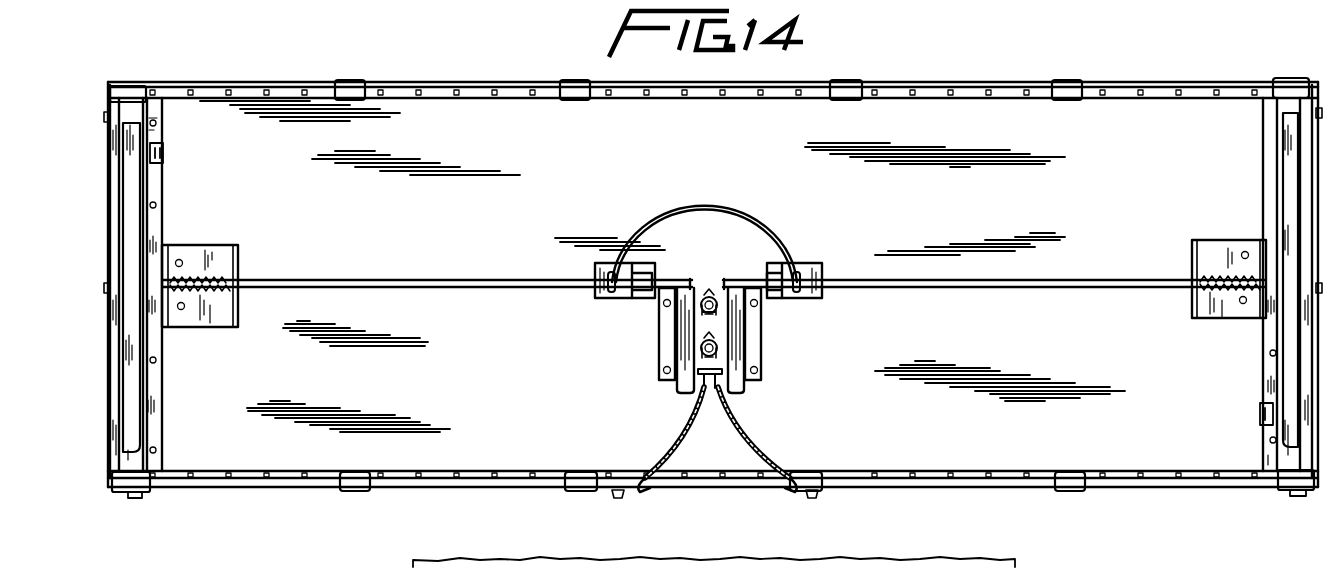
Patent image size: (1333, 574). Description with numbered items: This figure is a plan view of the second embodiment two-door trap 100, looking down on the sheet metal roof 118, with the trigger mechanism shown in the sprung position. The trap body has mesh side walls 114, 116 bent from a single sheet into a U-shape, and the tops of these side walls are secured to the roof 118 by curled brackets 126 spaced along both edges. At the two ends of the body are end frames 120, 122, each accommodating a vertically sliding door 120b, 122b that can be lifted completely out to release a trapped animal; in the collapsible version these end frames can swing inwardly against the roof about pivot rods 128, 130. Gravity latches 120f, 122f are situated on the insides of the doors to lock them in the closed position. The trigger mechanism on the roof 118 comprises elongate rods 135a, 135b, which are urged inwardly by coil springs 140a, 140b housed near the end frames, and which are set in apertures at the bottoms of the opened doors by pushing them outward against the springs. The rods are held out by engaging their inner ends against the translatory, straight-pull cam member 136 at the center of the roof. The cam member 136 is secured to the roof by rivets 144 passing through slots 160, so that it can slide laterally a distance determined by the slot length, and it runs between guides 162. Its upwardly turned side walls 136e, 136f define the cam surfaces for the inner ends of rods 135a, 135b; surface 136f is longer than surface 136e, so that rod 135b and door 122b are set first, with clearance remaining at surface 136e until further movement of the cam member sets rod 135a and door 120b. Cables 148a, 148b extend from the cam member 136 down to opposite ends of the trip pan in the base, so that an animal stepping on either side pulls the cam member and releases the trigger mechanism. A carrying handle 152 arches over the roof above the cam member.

The two-door trap 100 is at (458, 78).
The side wall 114 is at (958, 482).
The side wall 116 is at (962, 83).
The roof 118 is at (1090, 452).
The end frame 120 is at (130, 470).
The door 120b is at (140, 436).
The gravity latch 120f is at (165, 150).
The end frame 122 is at (1310, 362).
The door 122b is at (1282, 160).
The gravity latch 122f is at (1258, 415).
The curled bracket 126 is at (150, 84).
The pivot rod 128 is at (138, 498).
The pivot rod 130 is at (1298, 496).
The elongate rod 135a is at (428, 280).
The elongate rod 135b is at (975, 280).
The cam member 136 is at (730, 290).
The cam surface 136e is at (663, 356).
The cam surface 136f is at (755, 327).
The coil spring 140a is at (208, 327).
The coil spring 140b is at (1213, 250).
The rivet 144 is at (702, 296).
The cable 148a is at (650, 462).
The cable 148b is at (785, 462).
The carrying handle 152 is at (782, 232).
The slot 160 is at (700, 312).
The guide 162 is at (672, 385).